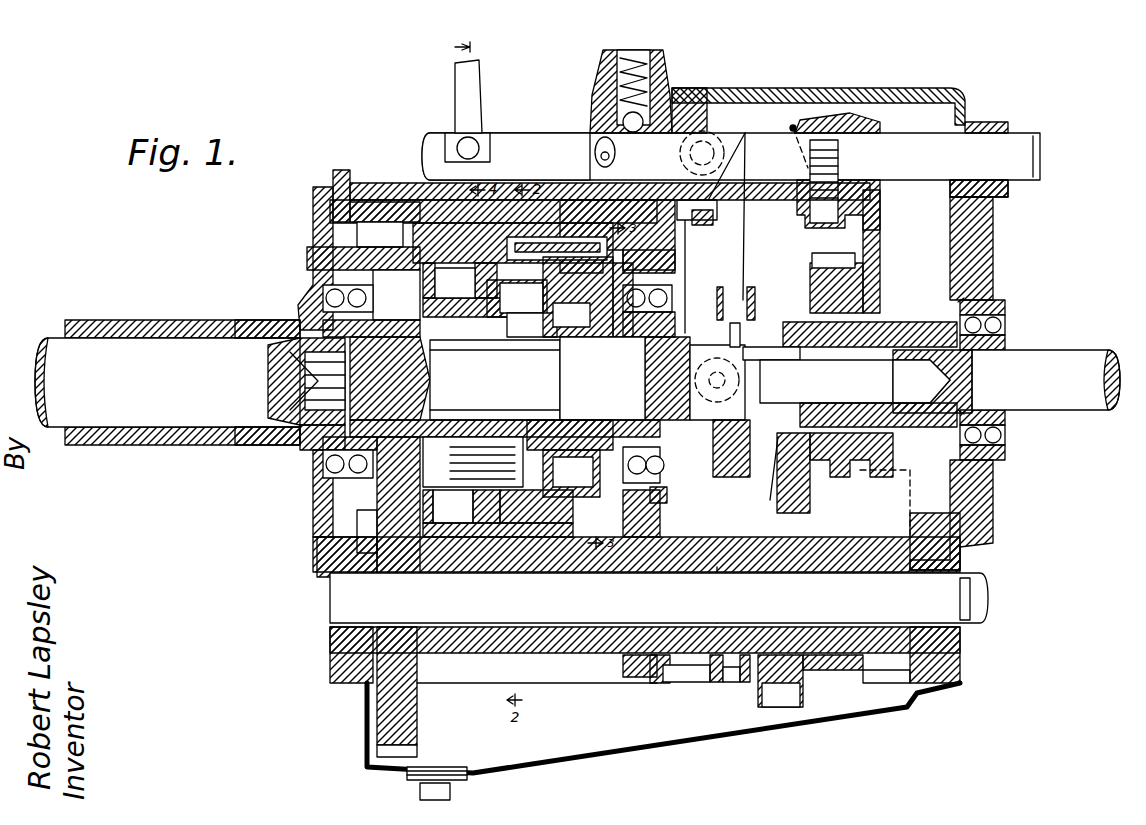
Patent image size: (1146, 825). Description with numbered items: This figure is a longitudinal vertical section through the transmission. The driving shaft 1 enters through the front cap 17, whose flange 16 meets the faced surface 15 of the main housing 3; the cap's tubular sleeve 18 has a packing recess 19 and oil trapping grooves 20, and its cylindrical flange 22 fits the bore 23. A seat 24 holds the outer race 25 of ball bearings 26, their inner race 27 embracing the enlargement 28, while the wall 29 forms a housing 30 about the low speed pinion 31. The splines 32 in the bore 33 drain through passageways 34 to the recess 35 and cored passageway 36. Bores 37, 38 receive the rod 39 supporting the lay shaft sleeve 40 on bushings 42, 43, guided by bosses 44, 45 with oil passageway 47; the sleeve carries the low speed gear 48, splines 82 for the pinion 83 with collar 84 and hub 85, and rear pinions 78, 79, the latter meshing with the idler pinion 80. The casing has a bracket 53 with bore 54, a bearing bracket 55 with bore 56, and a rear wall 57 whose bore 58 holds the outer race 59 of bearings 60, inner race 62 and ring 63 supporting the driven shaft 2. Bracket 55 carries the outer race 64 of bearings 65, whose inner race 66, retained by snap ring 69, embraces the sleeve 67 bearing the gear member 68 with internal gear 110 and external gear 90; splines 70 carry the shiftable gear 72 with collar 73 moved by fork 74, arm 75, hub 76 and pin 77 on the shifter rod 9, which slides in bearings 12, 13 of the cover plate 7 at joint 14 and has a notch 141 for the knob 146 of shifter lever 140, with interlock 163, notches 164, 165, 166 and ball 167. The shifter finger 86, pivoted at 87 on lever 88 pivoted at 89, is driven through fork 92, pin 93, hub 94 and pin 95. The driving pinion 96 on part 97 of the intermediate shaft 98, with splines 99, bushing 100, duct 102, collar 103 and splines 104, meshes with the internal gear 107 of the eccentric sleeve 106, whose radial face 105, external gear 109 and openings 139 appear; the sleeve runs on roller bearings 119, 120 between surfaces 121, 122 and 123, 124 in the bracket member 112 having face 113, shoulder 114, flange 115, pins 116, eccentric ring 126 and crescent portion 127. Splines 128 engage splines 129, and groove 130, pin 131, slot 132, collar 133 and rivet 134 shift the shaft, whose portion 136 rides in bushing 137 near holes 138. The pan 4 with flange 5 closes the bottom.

The driving shaft 1 is at (118, 405).
The driven shaft 2 is at (1060, 362).
The main housing 3 is at (995, 225).
The pan 4 is at (840, 717).
The flange 5 is at (925, 690).
The cover plate 7 is at (855, 90).
The shifter rod 9 is at (1015, 145).
The front bearing 12 is at (592, 120).
The rear bearing 13 is at (978, 125).
The joint 14 is at (952, 220).
The faced surface 15 is at (342, 172).
The flange 16 is at (320, 190).
The front cap 17 is at (300, 300).
The tubular sleeve 18 is at (245, 440).
The annular recess 19 is at (148, 437).
The oil trapping grooves 20 is at (275, 440).
The cylindrical flange 22 is at (315, 225).
The bore 23 is at (372, 204).
The internal cylindrical seat 24 is at (310, 268).
The outer race 25 is at (355, 530).
The ball bearings 26 is at (325, 480).
The flange 27 is at (320, 460).
The enlargement 28 is at (305, 445).
The inwardly extending wall 29 is at (370, 260).
The housing 30 is at (320, 285).
The low speed pinion 31 is at (362, 298).
The splines 32 is at (300, 365).
The bore 33 is at (312, 378).
The drilled passageways 34 is at (275, 346).
The annular recess 35 is at (298, 308).
The cored passageway 36 is at (318, 545).
The horizontal bore 37 is at (962, 556).
The horizontal bore 38 is at (330, 648).
The rod 39 is at (975, 598).
The lay shaft sleeve 40 is at (560, 650).
The bronze bushing 42 is at (470, 645).
The bronze bushing 43 is at (880, 623).
The boss 44 is at (370, 650).
The boss 45 is at (962, 650).
The passageway 47 is at (925, 540).
The low speed gear 48 is at (385, 718).
The integral bracket 53 is at (520, 545).
The bore 54 is at (490, 548).
The bearing bracket 55 is at (668, 512).
The cylindrical bore 56 is at (668, 498).
The rear wall 57 is at (975, 258).
The bore 58 is at (995, 292).
The outer race 59 is at (1005, 305).
The ball bearings 60 is at (1005, 325).
The inner race 62 is at (1005, 342).
The spring expanding plate ring 63 is at (958, 306).
The outer race 64 is at (685, 270).
The bearings 65 is at (677, 275).
The inner race 66 is at (673, 300).
The tubular sleeve 67 is at (622, 338).
The internal external gear member 68 is at (610, 440).
The snap ring 69 is at (676, 320).
The splines 70 is at (795, 320).
The shiftable gear 72 is at (820, 275).
The shifter collar 73 is at (880, 452).
The shifter fork 74 is at (870, 295).
The shifter arm 75 is at (880, 228).
The hub 76 is at (860, 122).
The taper screw pin 77 is at (815, 218).
The pinion 78 is at (770, 695).
The pinion 79 is at (870, 683).
The idler pinion 80 is at (905, 495).
The splines 82 is at (630, 658).
The pinion 83 is at (655, 678).
The shifting collar 84 is at (728, 683).
The hub 85 is at (685, 683).
The shifter finger 86 is at (710, 597).
The pivot 87 is at (745, 600).
The shifter lever 88 is at (730, 488).
The pivot 89 is at (745, 378).
The external gear 90 is at (600, 545).
The fork 92 is at (787, 140).
The pin 93 is at (730, 135).
The hub member 94 is at (718, 208).
The taper screw pin 95 is at (715, 218).
The driving pinion 96 is at (530, 330).
The enlarged cylindrical part 97 is at (428, 376).
The intermediate shaft 98 is at (505, 425).
The splines 99 is at (323, 404).
The bushing 100 is at (515, 335).
The oil duct 102 is at (495, 380).
The collar 103 is at (440, 320).
The splines 104 is at (432, 418).
The radial face 105 is at (540, 330).
The internal external gear sleeve 106 is at (553, 340).
The internal gear 107 is at (473, 462).
The external gear 109 is at (510, 325).
The internal gear 110 is at (545, 215).
The supporting bracket member 112 is at (455, 240).
The peripheral cylindrical face 113 is at (455, 545).
The shoulder 114 is at (410, 560).
The extending flange 115 is at (380, 233).
The pins 116 is at (362, 575).
The roller bearings 119 is at (455, 283).
The roller bearings 120 is at (575, 330).
The internal surface 121 is at (396, 293).
The internal surface 122 is at (560, 250).
The external surface 123 is at (455, 320).
The external surface 124 is at (590, 335).
The eccentric ring 126 is at (571, 473).
The crescent-shaped bracket portion 127 is at (505, 318).
The splines 128 is at (602, 378).
The splines 129 is at (605, 330).
The shifting groove 130 is at (745, 368).
The pin 131 is at (757, 312).
The slot 132 is at (742, 330).
The shifter collar 133 is at (775, 445).
The wire or rivet 134 is at (713, 460).
The reduced bearing portion 136 is at (880, 366).
The bushing 137 is at (840, 403).
The drilled holes 138 is at (922, 413).
The openings 139 is at (570, 435).
The shifter lever 140 is at (458, 82).
The notch 141 is at (462, 140).
The knob 146 is at (475, 140).
The interlock 163 is at (672, 128).
The notch 164 is at (580, 135).
The notch 165 is at (622, 126).
The notch 166 is at (668, 110).
The spring pressed ball 167 is at (610, 153).